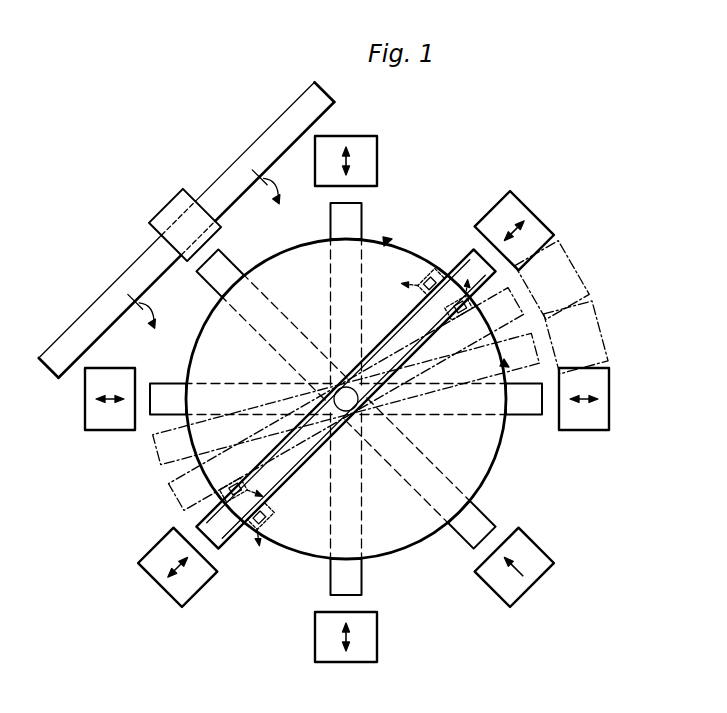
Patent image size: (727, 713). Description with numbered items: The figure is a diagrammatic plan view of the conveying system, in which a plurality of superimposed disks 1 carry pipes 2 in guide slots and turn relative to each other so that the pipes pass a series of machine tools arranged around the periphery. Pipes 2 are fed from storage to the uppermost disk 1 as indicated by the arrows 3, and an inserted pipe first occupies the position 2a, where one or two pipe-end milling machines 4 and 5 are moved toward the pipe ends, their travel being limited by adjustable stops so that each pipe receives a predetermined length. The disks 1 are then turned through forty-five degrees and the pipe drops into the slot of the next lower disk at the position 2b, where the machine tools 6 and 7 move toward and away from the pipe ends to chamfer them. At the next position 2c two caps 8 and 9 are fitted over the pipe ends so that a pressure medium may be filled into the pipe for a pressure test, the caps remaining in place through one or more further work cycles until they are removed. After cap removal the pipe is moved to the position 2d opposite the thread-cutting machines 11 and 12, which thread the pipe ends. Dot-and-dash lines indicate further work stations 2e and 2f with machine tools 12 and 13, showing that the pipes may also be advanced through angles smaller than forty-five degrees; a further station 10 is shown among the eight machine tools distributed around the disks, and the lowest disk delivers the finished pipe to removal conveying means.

The disk 1 is at (291, 540).
The pipe 2 is at (286, 123).
The pipe position 2a is at (462, 272).
The pipe position 2b is at (526, 409).
The pipe position 2c is at (480, 524).
The pipe position 2d is at (333, 216).
The further work station 2e is at (182, 493).
The further work station 2f is at (161, 448).
The feed arrow 3 is at (205, 247).
The pipe-end milling machine 4 is at (508, 210).
The pipe-end milling machine 5 is at (178, 590).
The machine tool 6 is at (596, 389).
The machine tool 7 is at (100, 422).
The cap 8 is at (531, 557).
The cap 9 is at (172, 212).
The processing station 10 is at (366, 646).
The thread-cutting machine 11 is at (380, 158).
The thread-cutting machine 12 is at (566, 262).
The machine tool 13 is at (585, 334).